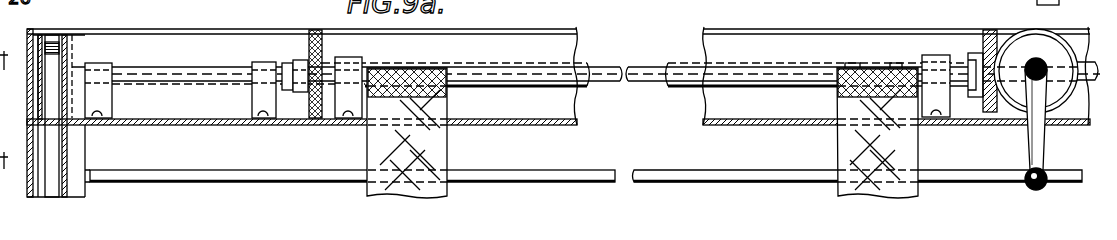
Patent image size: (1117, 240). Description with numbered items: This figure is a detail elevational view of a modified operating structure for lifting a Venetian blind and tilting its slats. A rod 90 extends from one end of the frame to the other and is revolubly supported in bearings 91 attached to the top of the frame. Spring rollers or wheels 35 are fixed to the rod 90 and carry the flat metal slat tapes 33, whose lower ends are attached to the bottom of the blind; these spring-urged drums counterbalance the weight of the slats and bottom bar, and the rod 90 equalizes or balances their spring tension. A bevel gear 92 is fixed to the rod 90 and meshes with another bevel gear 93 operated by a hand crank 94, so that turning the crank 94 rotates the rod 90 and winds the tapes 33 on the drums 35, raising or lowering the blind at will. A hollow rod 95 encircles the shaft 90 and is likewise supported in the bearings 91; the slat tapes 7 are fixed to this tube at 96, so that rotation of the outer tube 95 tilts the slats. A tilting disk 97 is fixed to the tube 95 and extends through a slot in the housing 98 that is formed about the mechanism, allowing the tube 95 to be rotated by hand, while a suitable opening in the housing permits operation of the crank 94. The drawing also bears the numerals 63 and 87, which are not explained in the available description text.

The slat tapes 7 is at (430, 143).
The flat metal tape 33 is at (52, 147).
The spring rollers 35 is at (68, 53).
The frame member 63 is at (558, 8).
The cross bar 87 is at (523, 6).
The rod 90 is at (206, 78).
The bearings 91 is at (102, 100).
The bevel gear 92 is at (997, 112).
The bevel gear 93 is at (1036, 45).
The hand crank 94 is at (1047, 144).
The hollow rod 95 is at (522, 66).
The tape connection 96 is at (385, 68).
The tilting disk 97 is at (308, 45).
The housing 98 is at (779, 126).